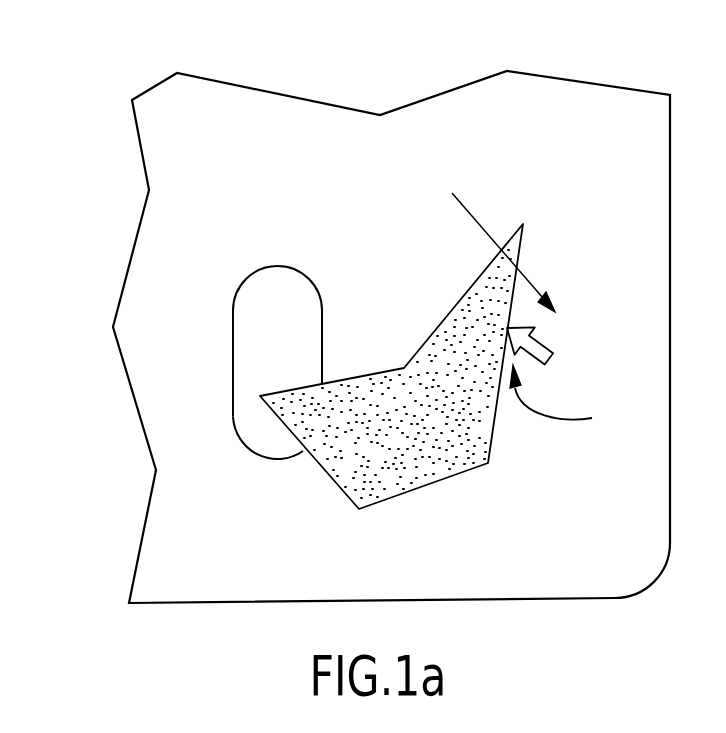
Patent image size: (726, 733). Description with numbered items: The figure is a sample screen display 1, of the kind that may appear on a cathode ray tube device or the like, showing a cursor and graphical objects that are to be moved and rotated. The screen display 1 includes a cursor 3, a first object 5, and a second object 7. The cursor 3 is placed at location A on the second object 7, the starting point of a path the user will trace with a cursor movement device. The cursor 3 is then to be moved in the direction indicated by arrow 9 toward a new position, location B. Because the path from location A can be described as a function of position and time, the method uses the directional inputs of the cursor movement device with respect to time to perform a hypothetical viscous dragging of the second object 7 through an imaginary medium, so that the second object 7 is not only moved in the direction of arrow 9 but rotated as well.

The screen display 1 is at (257, 85).
The cursor 3 is at (542, 340).
The first object 5 is at (235, 346).
The second object 7 is at (430, 492).
The arrow 9 is at (472, 210).
The location A is at (560, 404).